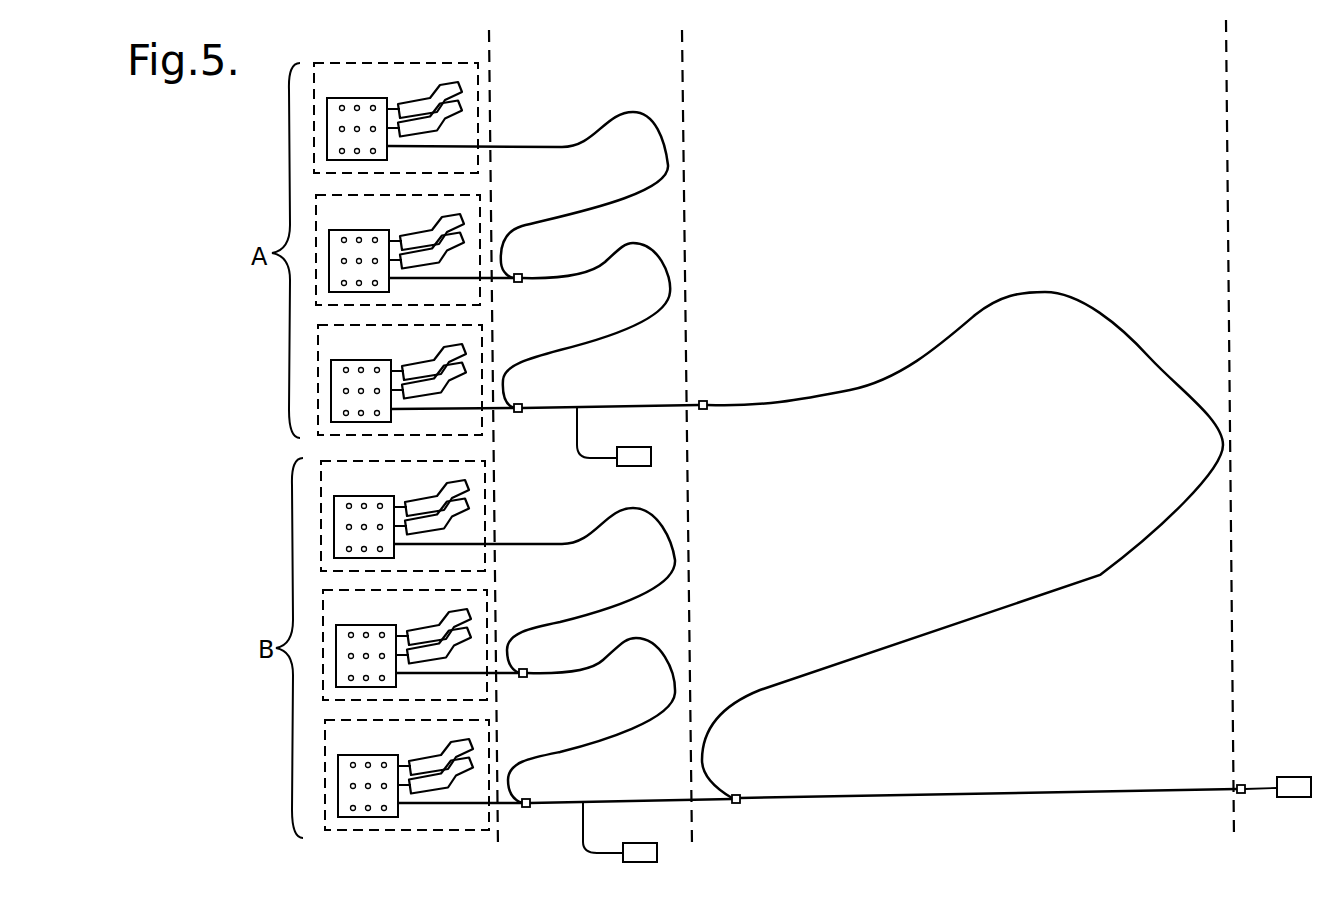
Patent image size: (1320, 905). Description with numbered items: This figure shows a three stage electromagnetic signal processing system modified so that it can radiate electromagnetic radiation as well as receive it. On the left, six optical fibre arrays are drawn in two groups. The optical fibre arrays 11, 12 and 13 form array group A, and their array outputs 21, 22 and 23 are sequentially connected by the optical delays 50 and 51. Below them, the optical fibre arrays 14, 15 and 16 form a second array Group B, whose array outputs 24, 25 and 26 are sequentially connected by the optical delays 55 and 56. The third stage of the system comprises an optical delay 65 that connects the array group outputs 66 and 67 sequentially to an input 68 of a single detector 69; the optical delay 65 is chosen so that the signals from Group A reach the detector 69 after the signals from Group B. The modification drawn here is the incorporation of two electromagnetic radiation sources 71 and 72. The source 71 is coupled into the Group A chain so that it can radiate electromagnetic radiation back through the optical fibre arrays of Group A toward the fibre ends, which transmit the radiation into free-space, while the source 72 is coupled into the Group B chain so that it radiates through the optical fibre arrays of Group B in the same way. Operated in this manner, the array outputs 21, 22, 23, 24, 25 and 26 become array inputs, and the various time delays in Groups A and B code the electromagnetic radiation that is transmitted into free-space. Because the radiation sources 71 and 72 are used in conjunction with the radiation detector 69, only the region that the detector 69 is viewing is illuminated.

The optical fibre array 11 is at (396, 118).
The optical fibre array 12 is at (398, 250).
The optical fibre array 13 is at (400, 380).
The optical fibre array 14 is at (403, 516).
The optical fibre array 15 is at (405, 645).
The optical fibre array 16 is at (407, 775).
The array output 21 is at (520, 146).
The array output 22 is at (521, 283).
The array output 23 is at (521, 413).
The array output 24 is at (510, 548).
The array output 25 is at (521, 678).
The array output 26 is at (528, 808).
The optical delay 50 is at (667, 165).
The optical delay 51 is at (669, 291).
The optical delay 55 is at (673, 561).
The optical delay 56 is at (674, 693).
The optical delay 65 is at (1143, 355).
The array group output 66 is at (640, 404).
The array group output 67 is at (633, 800).
The input 68 is at (1118, 790).
The single detector 69 is at (1292, 777).
The electromagnetic radiation source 71 is at (623, 470).
The electromagnetic radiation source 72 is at (657, 853).